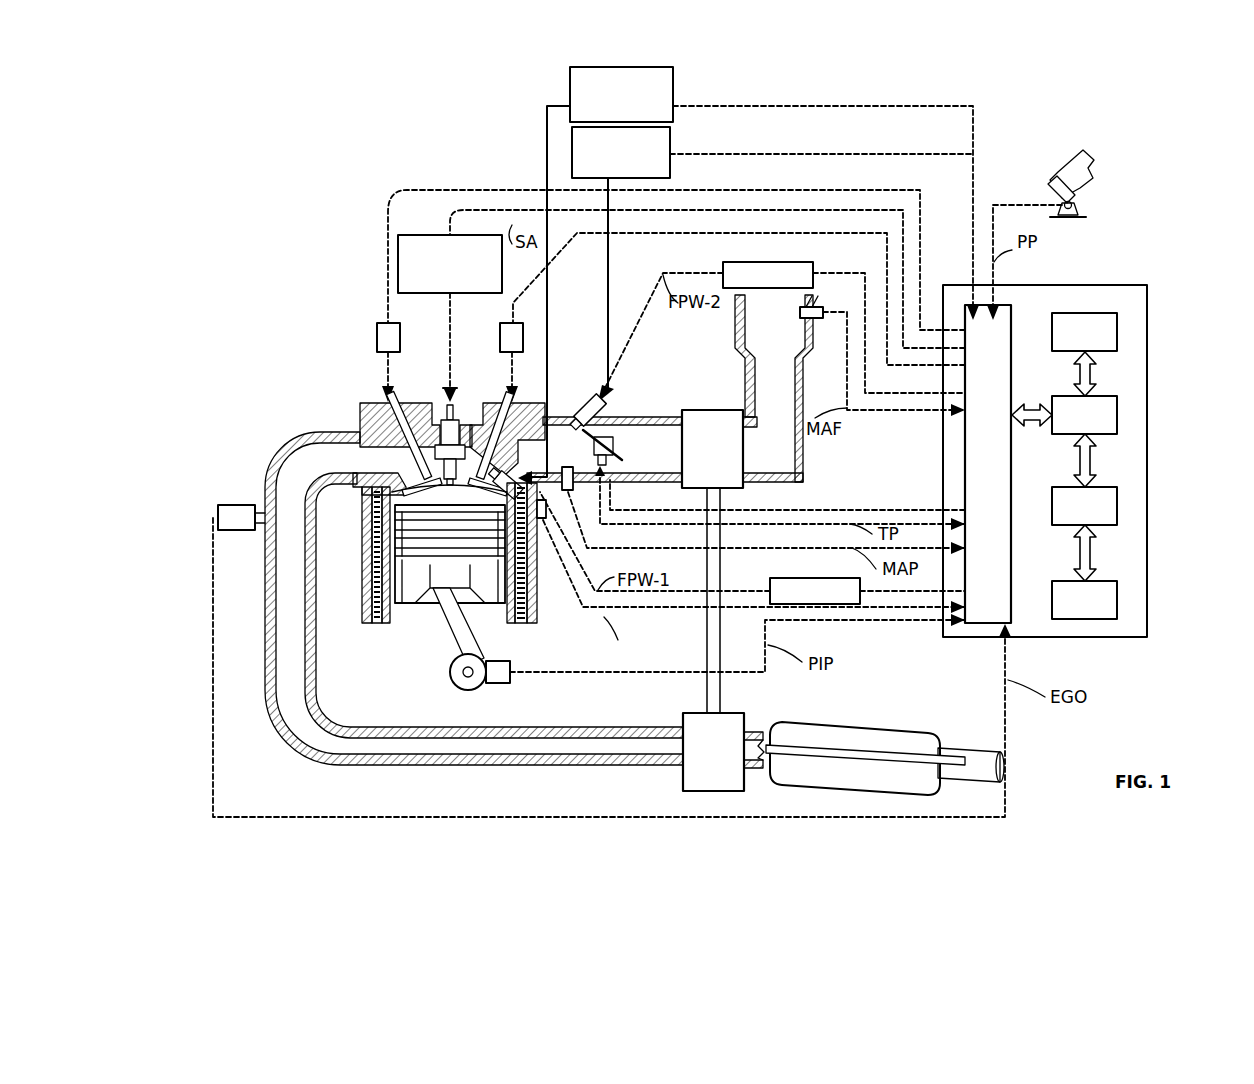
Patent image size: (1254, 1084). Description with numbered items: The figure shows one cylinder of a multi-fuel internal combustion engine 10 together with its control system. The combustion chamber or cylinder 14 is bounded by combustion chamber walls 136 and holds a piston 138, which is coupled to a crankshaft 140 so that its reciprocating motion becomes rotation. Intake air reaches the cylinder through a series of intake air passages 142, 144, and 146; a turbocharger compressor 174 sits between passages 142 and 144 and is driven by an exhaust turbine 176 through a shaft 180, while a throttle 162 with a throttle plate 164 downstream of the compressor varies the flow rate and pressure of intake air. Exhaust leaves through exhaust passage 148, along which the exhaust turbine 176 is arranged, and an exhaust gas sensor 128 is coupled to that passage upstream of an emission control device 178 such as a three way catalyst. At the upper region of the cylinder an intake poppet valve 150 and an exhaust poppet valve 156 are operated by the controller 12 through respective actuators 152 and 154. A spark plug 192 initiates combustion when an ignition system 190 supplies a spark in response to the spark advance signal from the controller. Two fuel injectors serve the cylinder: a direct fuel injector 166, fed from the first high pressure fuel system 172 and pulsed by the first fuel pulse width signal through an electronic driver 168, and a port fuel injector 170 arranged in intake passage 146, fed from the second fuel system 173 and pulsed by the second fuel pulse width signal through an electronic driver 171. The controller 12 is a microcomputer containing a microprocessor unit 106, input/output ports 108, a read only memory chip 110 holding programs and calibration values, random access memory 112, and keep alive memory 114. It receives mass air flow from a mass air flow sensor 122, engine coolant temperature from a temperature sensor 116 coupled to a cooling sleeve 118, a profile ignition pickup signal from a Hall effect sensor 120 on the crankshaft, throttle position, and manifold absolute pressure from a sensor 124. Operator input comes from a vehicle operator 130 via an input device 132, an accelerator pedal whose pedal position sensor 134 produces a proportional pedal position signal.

The internal combustion engine 10 is at (297, 356).
The controller 12 is at (1079, 449).
The cylinder (combustion chamber) 14 is at (405, 492).
The microprocessor unit 106 is at (1117, 414).
The input/output ports 108 is at (1012, 305).
The read only memory chip 110 is at (1117, 333).
The random access memory 112 is at (1117, 507).
The keep alive memory 114 is at (1117, 600).
The temperature sensor 116 is at (542, 545).
The cooling sleeve 118 is at (525, 578).
The Hall effect sensor 120 is at (505, 688).
The mass air flow sensor 122 is at (815, 305).
The manifold pressure sensor 124 is at (575, 492).
The exhaust gas sensor 128 is at (218, 510).
The vehicle operator 130 is at (1087, 180).
The input device 132 is at (1048, 185).
The pedal position sensor 134 is at (1080, 203).
The combustion chamber walls 136 is at (388, 625).
The piston 138 is at (433, 575).
The crankshaft 140 is at (458, 688).
The intake air passage 142 is at (790, 333).
The intake air passage 144 is at (668, 454).
The intake air passage 146 is at (581, 454).
The exhaust passage 148 is at (350, 466).
The intake poppet valve 150 is at (494, 428).
The actuator 152 is at (500, 340).
The actuator 154 is at (377, 340).
The exhaust poppet valve 156 is at (365, 432).
The throttle 162 is at (608, 435).
The throttle plate 164 is at (585, 417).
The fuel injector 166 is at (511, 475).
The electronic driver 168 is at (771, 578).
The fuel injector 170 is at (590, 400).
The electronic driver 171 is at (725, 262).
The fuel system-1 172 is at (673, 80).
The fuel system-2 173 is at (670, 136).
The compressor 174 is at (697, 410).
The exhaust turbine 176 is at (683, 778).
The emission control device 178 is at (853, 726).
The shaft 180 is at (712, 680).
The ignition system 190 is at (411, 235).
The spark plug 192 is at (447, 420).